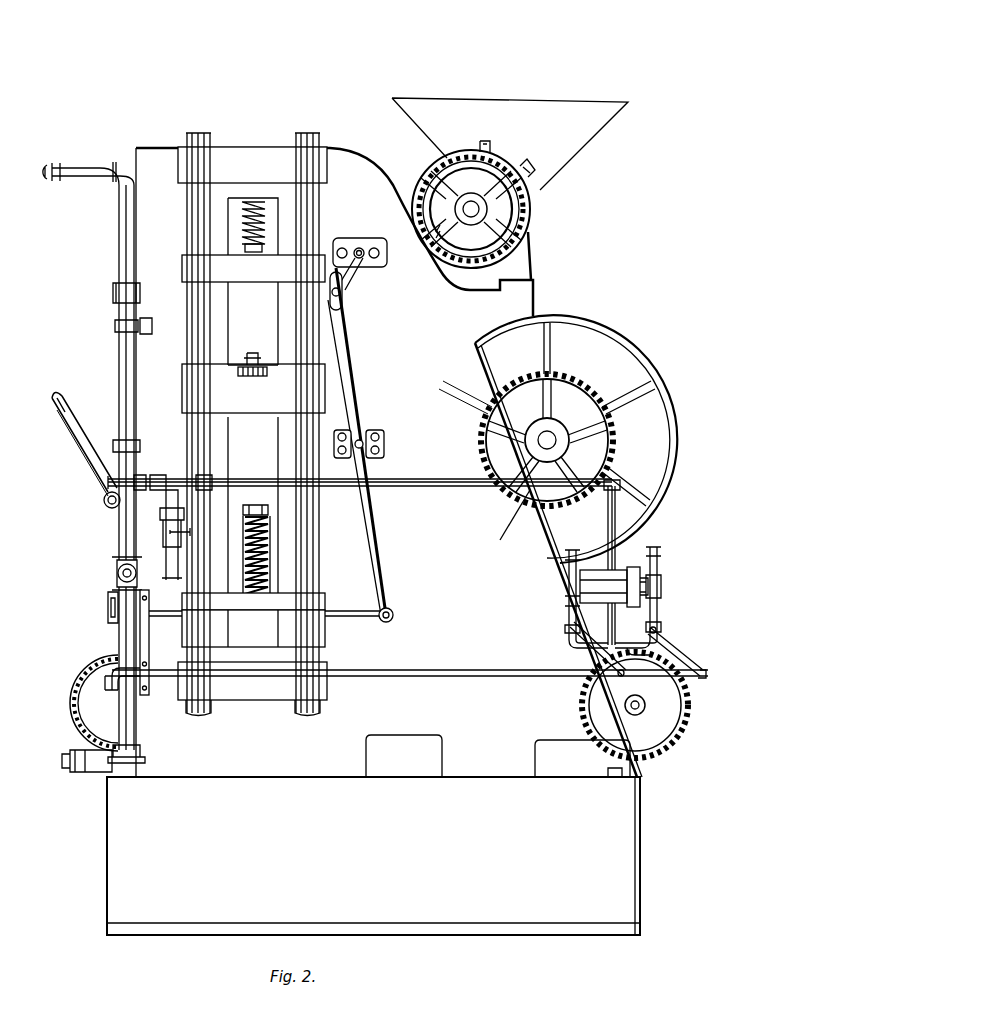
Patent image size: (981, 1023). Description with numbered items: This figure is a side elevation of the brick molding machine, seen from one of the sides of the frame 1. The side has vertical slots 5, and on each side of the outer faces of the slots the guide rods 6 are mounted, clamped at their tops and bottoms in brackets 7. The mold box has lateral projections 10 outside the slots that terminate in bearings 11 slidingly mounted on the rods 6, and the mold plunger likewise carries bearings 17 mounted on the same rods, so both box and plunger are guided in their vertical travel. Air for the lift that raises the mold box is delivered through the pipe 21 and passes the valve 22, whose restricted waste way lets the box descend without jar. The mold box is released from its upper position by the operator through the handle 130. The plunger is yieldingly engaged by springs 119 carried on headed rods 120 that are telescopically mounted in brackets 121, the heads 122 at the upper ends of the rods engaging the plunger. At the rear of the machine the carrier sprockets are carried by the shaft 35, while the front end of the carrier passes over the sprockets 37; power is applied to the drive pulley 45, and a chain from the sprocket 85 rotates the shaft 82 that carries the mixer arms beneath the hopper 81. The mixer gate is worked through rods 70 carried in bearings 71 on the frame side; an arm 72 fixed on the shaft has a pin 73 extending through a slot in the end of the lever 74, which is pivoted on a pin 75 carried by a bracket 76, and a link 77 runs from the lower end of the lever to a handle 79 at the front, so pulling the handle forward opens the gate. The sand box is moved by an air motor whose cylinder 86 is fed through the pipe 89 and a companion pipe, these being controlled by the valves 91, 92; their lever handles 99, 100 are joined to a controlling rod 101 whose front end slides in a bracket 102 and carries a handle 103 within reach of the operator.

The sides of the frame 1 is at (374, 541).
The vertical slots 5 is at (256, 448).
The guide rods 6 is at (190, 342).
The brackets 7 is at (256, 156).
The lateral projections 10 is at (253, 628).
The bearings 11 is at (326, 602).
The bearings 17 is at (184, 278).
The pipe 21 is at (120, 260).
The valve 22 is at (115, 570).
The shaft 35 is at (646, 705).
The sprockets 37 is at (78, 730).
The drive pulley 45 is at (668, 442).
The rods 70 is at (359, 248).
The bearings 71 is at (374, 242).
The arm 72 is at (344, 280).
The pin 73 is at (342, 296).
The lever 74 is at (354, 382).
The pin 75 is at (372, 430).
The bracket 76 is at (386, 444).
The link 77 is at (380, 618).
The handle 79 is at (108, 616).
The hopper 81 is at (596, 126).
The shaft 82 is at (476, 209).
The sprocket 85 is at (602, 397).
The cylinder 86 is at (604, 598).
The pipe 89 is at (660, 584).
The valve 91 is at (660, 628).
The valve 92 is at (568, 624).
The lever handle 99 is at (678, 658).
The lever handle 100 is at (598, 656).
The controlling rod 101 is at (466, 672).
The bracket 102 is at (149, 690).
The handle 103 is at (70, 671).
The springs 119 is at (264, 565).
The headed rods 120 is at (264, 549).
The brackets 121 is at (278, 598).
The heads 122 is at (262, 531).
The handle 130 is at (88, 456).